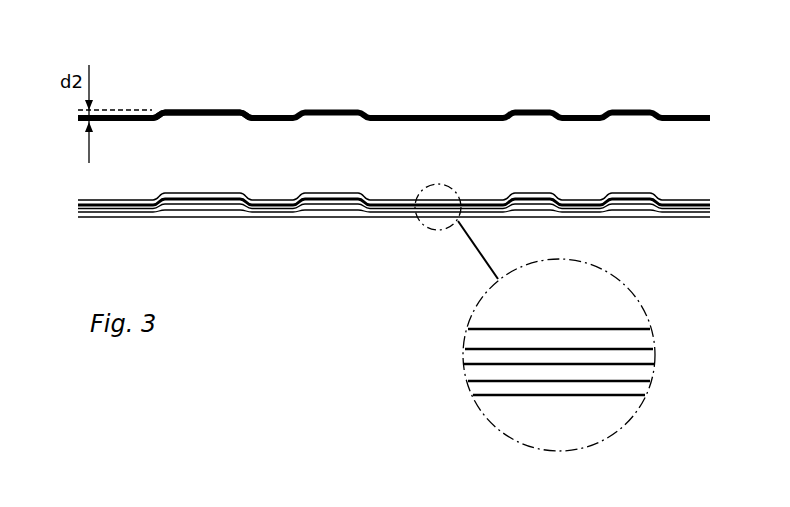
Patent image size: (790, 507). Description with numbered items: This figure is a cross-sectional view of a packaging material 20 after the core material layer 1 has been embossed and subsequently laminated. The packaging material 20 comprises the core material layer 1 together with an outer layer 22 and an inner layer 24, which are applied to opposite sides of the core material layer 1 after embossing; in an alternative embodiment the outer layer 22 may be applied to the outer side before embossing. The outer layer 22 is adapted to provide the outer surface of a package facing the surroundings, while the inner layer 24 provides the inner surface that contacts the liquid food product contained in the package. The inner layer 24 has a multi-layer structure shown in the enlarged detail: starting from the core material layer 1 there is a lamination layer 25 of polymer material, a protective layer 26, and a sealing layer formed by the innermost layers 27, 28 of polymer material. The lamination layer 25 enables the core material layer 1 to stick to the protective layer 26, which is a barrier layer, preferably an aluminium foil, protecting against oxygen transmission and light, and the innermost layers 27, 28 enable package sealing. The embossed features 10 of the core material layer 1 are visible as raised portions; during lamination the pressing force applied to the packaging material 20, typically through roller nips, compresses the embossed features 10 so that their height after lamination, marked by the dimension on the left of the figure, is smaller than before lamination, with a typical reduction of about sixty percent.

The core material layer 1 is at (253, 143).
The embossed features 10 is at (372, 98).
The packaging material 20 is at (447, 83).
The outer layer 22 is at (210, 112).
The inner layer 24 is at (260, 236).
The lamination layer 25 is at (470, 340).
The protective layer 26 is at (462, 354).
The innermost layer 27 is at (460, 377).
The innermost layer 28 is at (472, 393).